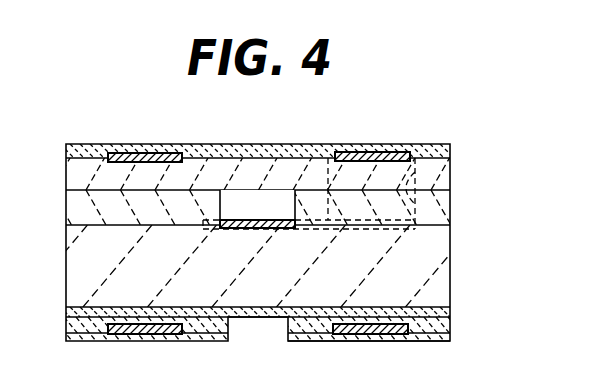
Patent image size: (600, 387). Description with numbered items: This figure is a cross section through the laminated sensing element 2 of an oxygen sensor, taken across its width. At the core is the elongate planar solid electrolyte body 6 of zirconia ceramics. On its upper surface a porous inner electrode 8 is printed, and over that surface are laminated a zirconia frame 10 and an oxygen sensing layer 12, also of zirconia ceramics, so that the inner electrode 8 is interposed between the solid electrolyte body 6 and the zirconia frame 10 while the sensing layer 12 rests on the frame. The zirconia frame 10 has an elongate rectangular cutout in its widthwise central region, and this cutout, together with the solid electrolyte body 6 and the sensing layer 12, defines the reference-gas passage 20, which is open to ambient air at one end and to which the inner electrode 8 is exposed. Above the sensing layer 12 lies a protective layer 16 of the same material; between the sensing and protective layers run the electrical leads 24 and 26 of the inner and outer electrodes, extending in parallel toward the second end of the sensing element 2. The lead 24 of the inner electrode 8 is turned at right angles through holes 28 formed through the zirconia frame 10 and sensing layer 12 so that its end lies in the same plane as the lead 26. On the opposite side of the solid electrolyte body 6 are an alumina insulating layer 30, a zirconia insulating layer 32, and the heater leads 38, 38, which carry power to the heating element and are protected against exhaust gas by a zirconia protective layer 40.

The sensing element 2 is at (445, 112).
The solid electrolyte body 6 is at (443, 290).
The inner electrode 8 is at (235, 219).
The zirconia frame 10 is at (440, 206).
The oxygen sensing layer 12 is at (440, 176).
The protective layer 16 is at (450, 152).
The reference-gas passage 20 is at (278, 197).
The electrical lead 24 is at (377, 151).
The electrical lead 26 is at (141, 152).
The holes 28 is at (410, 196).
The alumina insulating layer 30 is at (445, 312).
The zirconia insulating layer 32 is at (447, 327).
The electrical leads 38 is at (142, 336).
The protective layer 40 is at (442, 342).